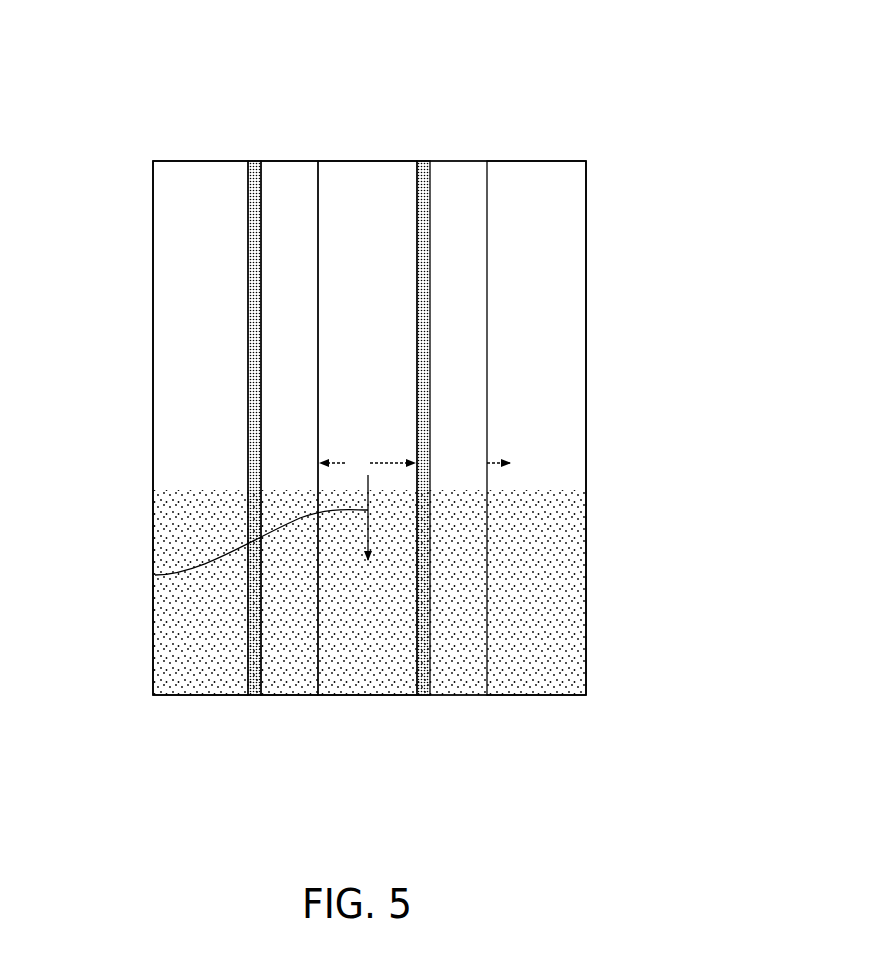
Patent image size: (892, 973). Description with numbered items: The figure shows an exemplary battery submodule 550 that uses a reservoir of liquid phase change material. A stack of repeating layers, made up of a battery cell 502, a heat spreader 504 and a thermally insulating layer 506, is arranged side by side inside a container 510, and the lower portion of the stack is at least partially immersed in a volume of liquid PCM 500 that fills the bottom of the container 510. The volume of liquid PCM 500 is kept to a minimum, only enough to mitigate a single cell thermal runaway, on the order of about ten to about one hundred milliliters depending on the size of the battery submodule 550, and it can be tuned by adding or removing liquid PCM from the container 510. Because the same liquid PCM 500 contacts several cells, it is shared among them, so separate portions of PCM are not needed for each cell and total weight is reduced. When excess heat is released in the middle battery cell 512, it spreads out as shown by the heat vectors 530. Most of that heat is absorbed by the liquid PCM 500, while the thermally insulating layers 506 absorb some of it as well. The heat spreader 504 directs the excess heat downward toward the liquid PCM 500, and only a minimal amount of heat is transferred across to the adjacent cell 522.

The battery submodule 550 is at (126, 56).
The container 510 is at (586, 350).
The liquid PCM layer 500 is at (372, 695).
The battery cell 502 is at (200, 197).
The thermally insulating layer 506 is at (294, 197).
The middle battery cell 512 is at (381, 197).
The adjacent cell 522 is at (543, 197).
The heat spreader 504 is at (254, 695).
The heat vectors 530 is at (155, 575).